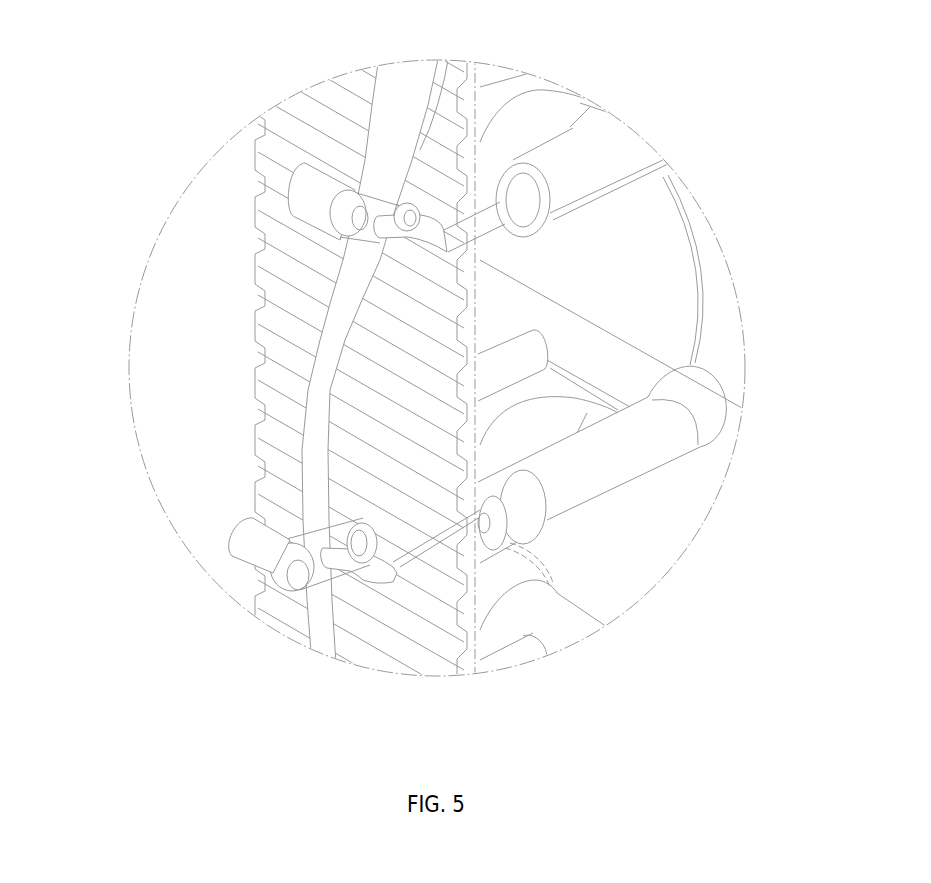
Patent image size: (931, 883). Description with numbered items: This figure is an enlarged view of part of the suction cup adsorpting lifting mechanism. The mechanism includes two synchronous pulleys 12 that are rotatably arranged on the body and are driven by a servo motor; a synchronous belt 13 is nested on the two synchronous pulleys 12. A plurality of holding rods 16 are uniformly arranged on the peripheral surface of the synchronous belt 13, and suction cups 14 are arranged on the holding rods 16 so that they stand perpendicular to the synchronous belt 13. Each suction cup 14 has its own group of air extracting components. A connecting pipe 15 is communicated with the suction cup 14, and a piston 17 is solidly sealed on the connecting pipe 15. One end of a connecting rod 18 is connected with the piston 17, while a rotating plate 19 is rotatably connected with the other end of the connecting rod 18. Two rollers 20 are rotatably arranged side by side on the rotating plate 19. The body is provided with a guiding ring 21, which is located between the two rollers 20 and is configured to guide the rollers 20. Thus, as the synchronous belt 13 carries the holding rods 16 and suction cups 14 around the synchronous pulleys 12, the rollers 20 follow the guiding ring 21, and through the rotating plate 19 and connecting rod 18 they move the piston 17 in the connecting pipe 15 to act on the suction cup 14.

The synchronous pulley 12 is at (235, 155).
The synchronous belt 13 is at (263, 217).
The suction cup 14 is at (637, 247).
The connecting pipe 15 is at (650, 433).
The holding rod 16 is at (517, 360).
The piston 17 is at (523, 500).
The connecting rod 18 is at (400, 567).
The rotating plate 19 is at (308, 190).
The roller 20 is at (297, 537).
The guiding ring 21 is at (290, 477).